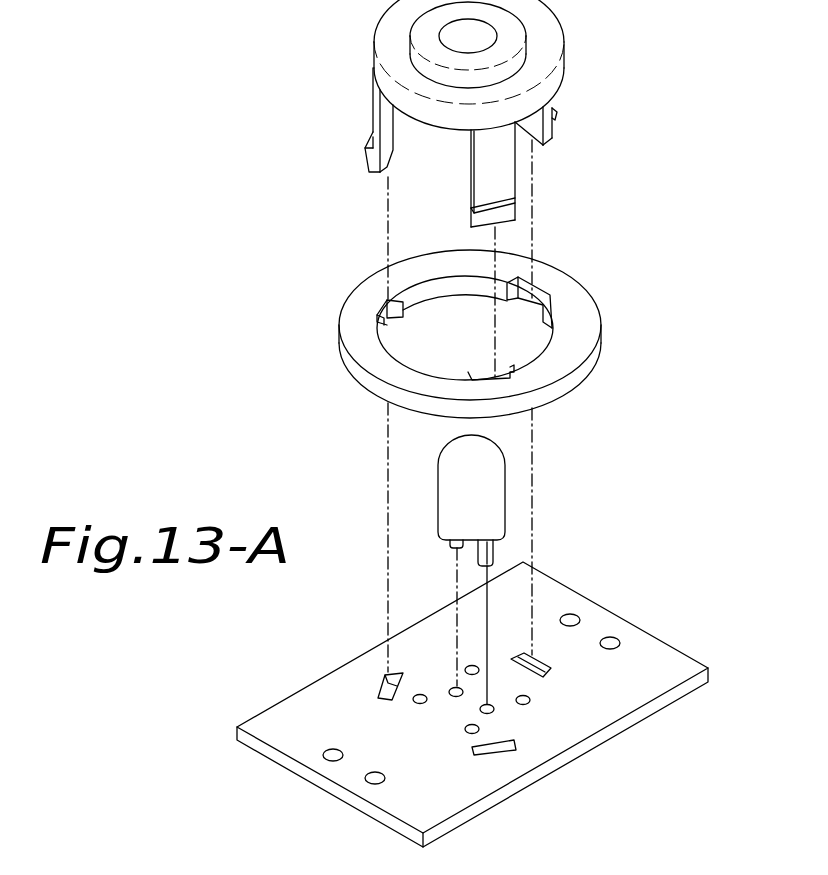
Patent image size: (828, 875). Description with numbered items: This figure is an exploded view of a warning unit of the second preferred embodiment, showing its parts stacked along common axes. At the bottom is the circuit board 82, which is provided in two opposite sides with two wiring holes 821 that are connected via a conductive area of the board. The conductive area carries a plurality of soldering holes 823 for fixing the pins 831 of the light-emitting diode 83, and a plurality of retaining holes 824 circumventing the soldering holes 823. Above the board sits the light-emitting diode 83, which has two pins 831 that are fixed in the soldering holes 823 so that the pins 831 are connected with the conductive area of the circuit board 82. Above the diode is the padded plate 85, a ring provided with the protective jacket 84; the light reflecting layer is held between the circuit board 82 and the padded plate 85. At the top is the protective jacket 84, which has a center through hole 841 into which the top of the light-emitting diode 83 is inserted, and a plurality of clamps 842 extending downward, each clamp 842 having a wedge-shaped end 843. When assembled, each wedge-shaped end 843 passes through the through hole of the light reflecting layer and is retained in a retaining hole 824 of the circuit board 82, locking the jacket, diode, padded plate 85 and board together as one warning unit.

The circuit board 82 is at (590, 720).
The wiring holes 821 is at (575, 612).
The soldering holes 823 is at (427, 704).
The retaining holes 824 is at (382, 683).
The light-emitting diode 83 is at (452, 517).
The pins 831 is at (448, 547).
The protective jacket 84 is at (393, 50).
The center through hole 841 is at (480, 33).
The clamps 842 is at (372, 117).
The wedge-shaped end 843 is at (365, 157).
The padded plate 85 is at (580, 302).